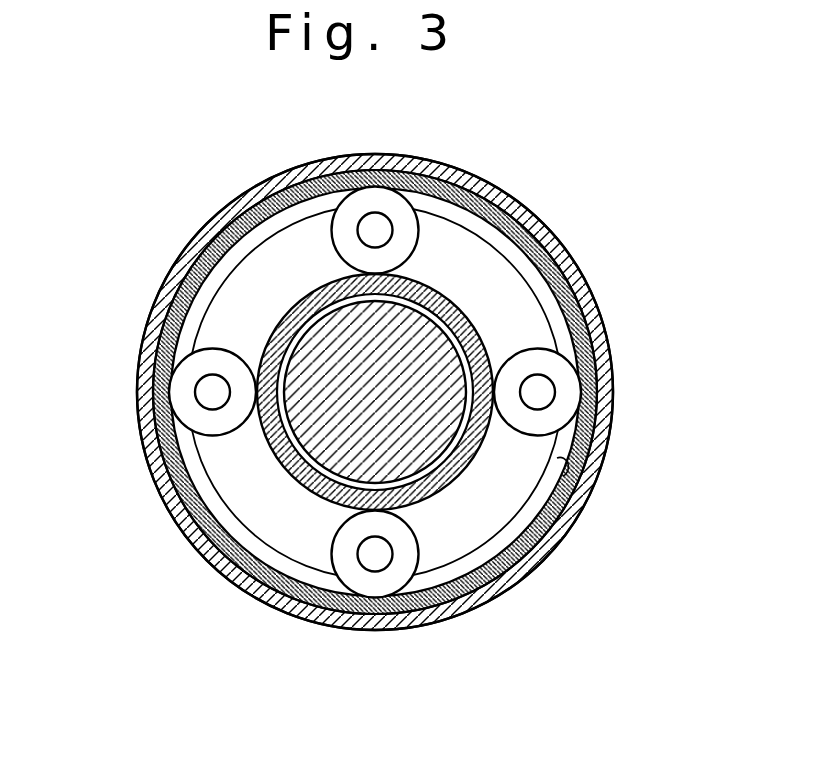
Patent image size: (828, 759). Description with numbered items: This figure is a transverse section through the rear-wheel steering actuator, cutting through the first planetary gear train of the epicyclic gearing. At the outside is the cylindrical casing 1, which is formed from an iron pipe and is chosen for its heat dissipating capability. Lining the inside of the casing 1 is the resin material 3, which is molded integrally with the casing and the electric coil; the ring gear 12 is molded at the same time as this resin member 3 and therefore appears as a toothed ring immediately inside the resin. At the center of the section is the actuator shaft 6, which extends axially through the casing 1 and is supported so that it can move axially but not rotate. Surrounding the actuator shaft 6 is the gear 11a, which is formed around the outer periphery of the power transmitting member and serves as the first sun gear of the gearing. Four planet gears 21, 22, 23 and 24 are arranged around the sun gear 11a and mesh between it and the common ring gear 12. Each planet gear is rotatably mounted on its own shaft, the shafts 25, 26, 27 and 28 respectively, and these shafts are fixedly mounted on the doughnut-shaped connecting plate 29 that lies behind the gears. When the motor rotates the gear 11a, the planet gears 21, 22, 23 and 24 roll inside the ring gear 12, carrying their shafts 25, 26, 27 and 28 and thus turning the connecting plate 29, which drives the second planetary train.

The casing 1 is at (572, 267).
The resin material 3 is at (569, 507).
The actuator shaft 6 is at (435, 348).
The gear 11a is at (457, 303).
The ring gear 12 is at (575, 483).
The planet gear 21 is at (407, 202).
The planet gear 22 is at (395, 582).
The planet gear 23 is at (187, 408).
The planet gear 24 is at (567, 400).
The shaft 25 is at (365, 218).
The shaft 26 is at (373, 558).
The shaft 27 is at (210, 383).
The shaft 28 is at (541, 385).
The connecting plate 29 is at (235, 487).